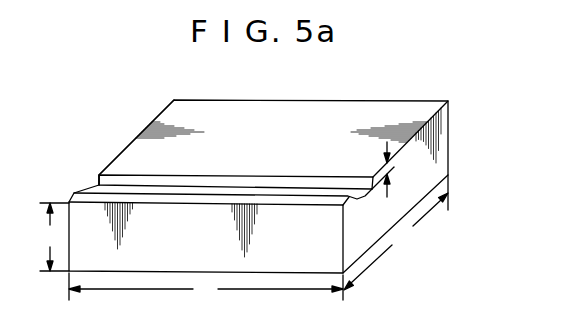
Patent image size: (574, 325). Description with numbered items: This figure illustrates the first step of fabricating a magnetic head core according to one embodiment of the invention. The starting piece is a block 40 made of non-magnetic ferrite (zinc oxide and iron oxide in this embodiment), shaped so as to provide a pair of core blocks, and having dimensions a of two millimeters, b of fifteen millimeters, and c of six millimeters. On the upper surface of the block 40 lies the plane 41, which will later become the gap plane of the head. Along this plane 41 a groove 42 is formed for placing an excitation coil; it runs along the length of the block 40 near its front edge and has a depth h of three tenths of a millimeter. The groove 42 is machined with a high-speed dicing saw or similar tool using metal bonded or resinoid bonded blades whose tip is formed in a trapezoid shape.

The block 40 is at (442, 153).
The plane 41 is at (403, 115).
The groove 42 is at (109, 166).